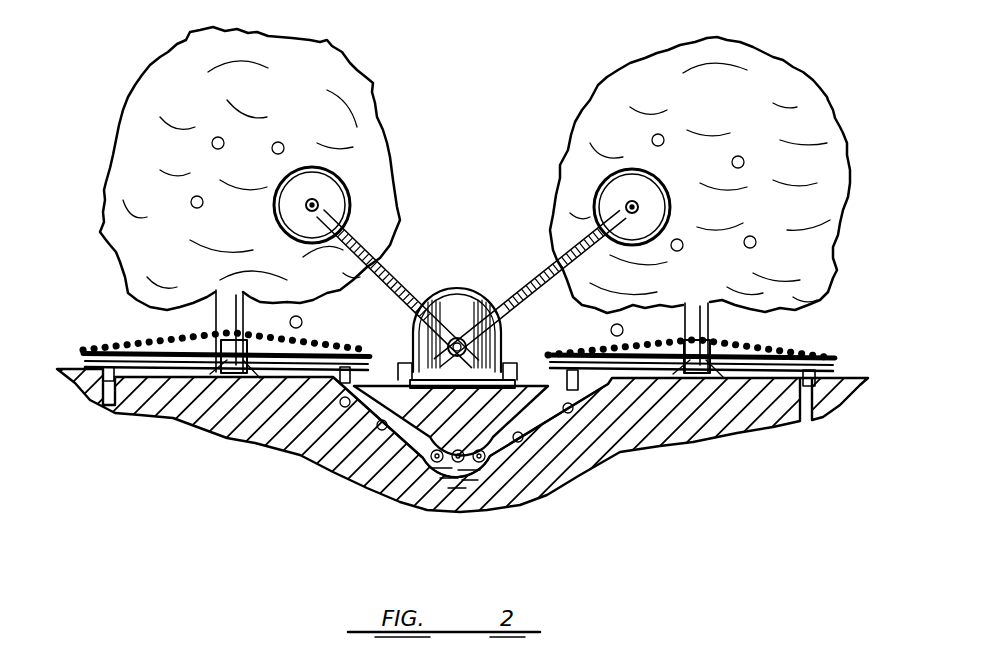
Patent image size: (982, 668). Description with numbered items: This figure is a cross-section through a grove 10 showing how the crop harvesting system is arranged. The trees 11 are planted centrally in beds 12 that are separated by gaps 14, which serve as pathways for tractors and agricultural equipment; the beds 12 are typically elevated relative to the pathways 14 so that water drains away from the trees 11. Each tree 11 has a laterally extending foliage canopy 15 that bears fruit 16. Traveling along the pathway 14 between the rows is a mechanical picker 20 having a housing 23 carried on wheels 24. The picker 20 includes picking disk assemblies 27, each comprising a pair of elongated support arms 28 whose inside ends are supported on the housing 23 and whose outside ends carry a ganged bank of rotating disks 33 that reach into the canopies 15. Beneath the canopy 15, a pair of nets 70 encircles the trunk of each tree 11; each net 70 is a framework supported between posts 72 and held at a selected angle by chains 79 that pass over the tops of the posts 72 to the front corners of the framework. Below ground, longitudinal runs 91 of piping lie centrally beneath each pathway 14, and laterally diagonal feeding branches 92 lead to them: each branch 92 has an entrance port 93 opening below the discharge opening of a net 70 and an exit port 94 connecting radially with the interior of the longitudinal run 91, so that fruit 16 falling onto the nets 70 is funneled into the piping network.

The grove 10 is at (804, 54).
The trees 11 is at (167, 57).
The beds 12 is at (173, 393).
The gaps 14 is at (383, 383).
The foliage canopies 15 is at (172, 159).
The fruit 16 is at (278, 142).
The mechanical picker 20 is at (476, 308).
The housing 23 is at (455, 305).
The wheels 24 is at (527, 373).
The picking disk assemblies 27 is at (345, 173).
The support arms 28 is at (403, 290).
The rotating disks 33 is at (337, 203).
The nets 70 is at (125, 346).
The posts 72 is at (227, 376).
The chains 79 is at (160, 338).
The longitudinal runs 91 is at (487, 496).
The feeding branches 92 is at (112, 410).
The entrance ports 93 is at (320, 400).
The exit ports 94 is at (388, 458).